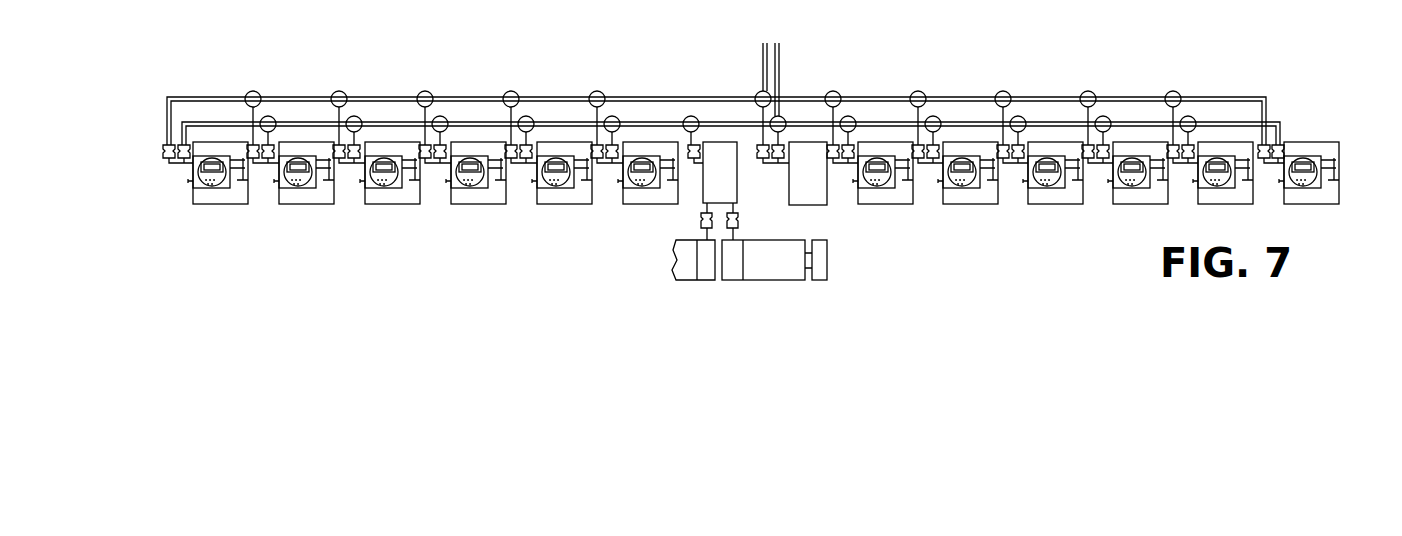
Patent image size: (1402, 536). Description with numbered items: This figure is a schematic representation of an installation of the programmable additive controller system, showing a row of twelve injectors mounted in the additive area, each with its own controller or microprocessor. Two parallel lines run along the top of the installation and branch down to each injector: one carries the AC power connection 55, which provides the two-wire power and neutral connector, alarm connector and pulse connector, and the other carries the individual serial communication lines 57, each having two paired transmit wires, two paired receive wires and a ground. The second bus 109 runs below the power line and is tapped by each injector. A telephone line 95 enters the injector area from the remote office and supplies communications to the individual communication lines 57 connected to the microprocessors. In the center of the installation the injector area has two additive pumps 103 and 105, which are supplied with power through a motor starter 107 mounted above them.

The 120 volt AC power connection 55 is at (1021, 142).
The serial communication lines 57 is at (600, 116).
The telephone line 95 is at (768, 58).
The additive pump 103 is at (633, 238).
The additive pump 105 is at (796, 281).
The motor starter 107 is at (738, 192).
The second communication bus 109 is at (564, 122).